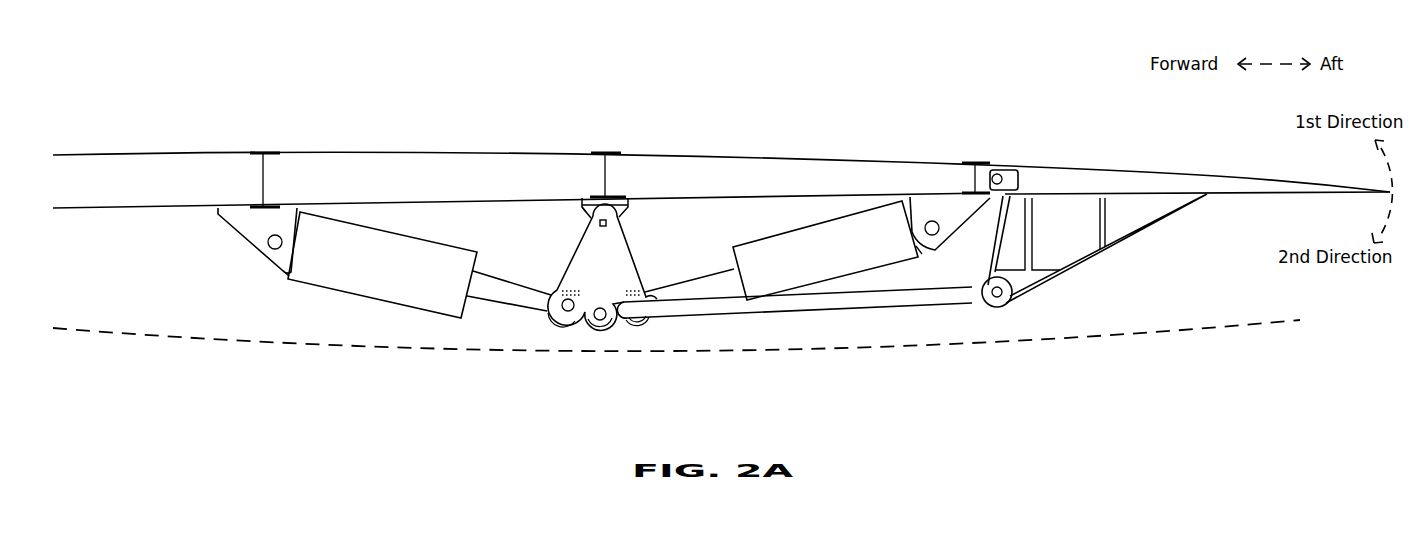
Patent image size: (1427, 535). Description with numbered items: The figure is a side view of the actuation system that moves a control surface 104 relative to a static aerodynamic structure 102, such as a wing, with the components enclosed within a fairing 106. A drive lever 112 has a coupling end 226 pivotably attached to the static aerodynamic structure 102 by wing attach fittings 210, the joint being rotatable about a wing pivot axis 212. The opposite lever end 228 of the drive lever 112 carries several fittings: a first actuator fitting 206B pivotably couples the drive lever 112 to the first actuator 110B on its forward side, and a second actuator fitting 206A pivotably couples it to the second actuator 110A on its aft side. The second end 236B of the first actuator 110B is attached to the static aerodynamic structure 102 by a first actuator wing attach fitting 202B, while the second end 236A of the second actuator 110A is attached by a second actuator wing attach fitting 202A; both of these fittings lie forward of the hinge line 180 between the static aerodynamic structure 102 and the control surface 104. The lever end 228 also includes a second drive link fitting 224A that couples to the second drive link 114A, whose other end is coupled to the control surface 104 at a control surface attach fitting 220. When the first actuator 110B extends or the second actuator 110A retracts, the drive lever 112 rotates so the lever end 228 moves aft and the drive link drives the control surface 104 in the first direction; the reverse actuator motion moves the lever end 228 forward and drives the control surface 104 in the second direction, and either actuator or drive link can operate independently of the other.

The static aerodynamic structure 102 is at (122, 153).
The control surface 104 is at (1130, 169).
The fairing 106 is at (1290, 322).
The second actuator 110A is at (780, 238).
The first actuator 110B is at (380, 300).
The drive lever 112 is at (572, 271).
The second drive link 114A is at (878, 303).
The hinge line 180 is at (1010, 172).
The second actuator wing attach fitting 202A is at (928, 210).
The first actuator wing attach fitting 202B is at (233, 233).
The second actuator fitting 206A is at (642, 328).
The first actuator fitting 206B is at (553, 312).
The wing attach fittings 210 is at (630, 208).
The wing pivot axis 212 is at (598, 224).
The control surface attach fitting 220 is at (1103, 251).
The second drive link fitting 224A is at (592, 332).
The coupling end 226 is at (588, 208).
The lever end 228 is at (603, 331).
The second end of second actuator 236A is at (922, 255).
The second end of first actuator 236B is at (280, 273).